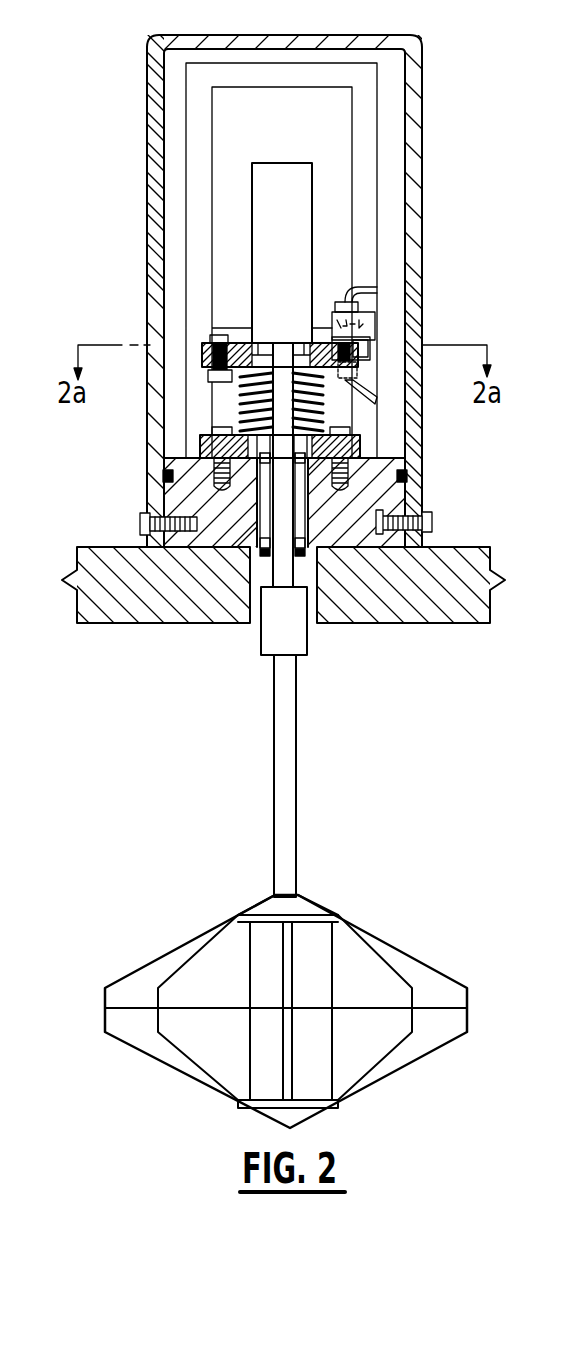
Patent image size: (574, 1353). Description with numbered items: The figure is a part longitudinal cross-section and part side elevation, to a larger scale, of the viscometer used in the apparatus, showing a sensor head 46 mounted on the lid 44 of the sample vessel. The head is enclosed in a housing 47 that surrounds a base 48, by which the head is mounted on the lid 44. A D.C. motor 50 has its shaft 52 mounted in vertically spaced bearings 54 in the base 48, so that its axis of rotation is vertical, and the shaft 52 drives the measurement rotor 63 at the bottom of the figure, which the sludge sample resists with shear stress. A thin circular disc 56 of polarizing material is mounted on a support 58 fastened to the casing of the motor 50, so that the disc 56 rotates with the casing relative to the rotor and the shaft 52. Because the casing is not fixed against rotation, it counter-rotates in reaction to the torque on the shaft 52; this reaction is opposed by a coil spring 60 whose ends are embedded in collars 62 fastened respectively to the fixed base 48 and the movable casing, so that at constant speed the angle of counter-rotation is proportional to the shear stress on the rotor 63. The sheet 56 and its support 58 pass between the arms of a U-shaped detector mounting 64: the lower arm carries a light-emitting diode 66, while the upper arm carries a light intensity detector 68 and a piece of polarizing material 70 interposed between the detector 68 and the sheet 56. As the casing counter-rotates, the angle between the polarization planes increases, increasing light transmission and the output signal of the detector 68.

The lid 44 is at (123, 547).
The sensor head 46 is at (116, 62).
The housing 47 is at (148, 138).
The base 48 is at (153, 490).
The D.C. motor 50 is at (312, 183).
The shaft 52 is at (273, 772).
The bearings 54 is at (308, 530).
The disc of polarizing material 56 is at (207, 352).
The support 58 is at (203, 343).
The coil spring 60 is at (238, 405).
The collars 62 is at (202, 372).
The measurement rotor 63 is at (205, 932).
The U-shaped detector mounting 64 is at (380, 353).
The light-emitting diode 66 is at (337, 383).
The light intensity detector 68 is at (360, 307).
The piece of polarizing material 70 is at (367, 325).